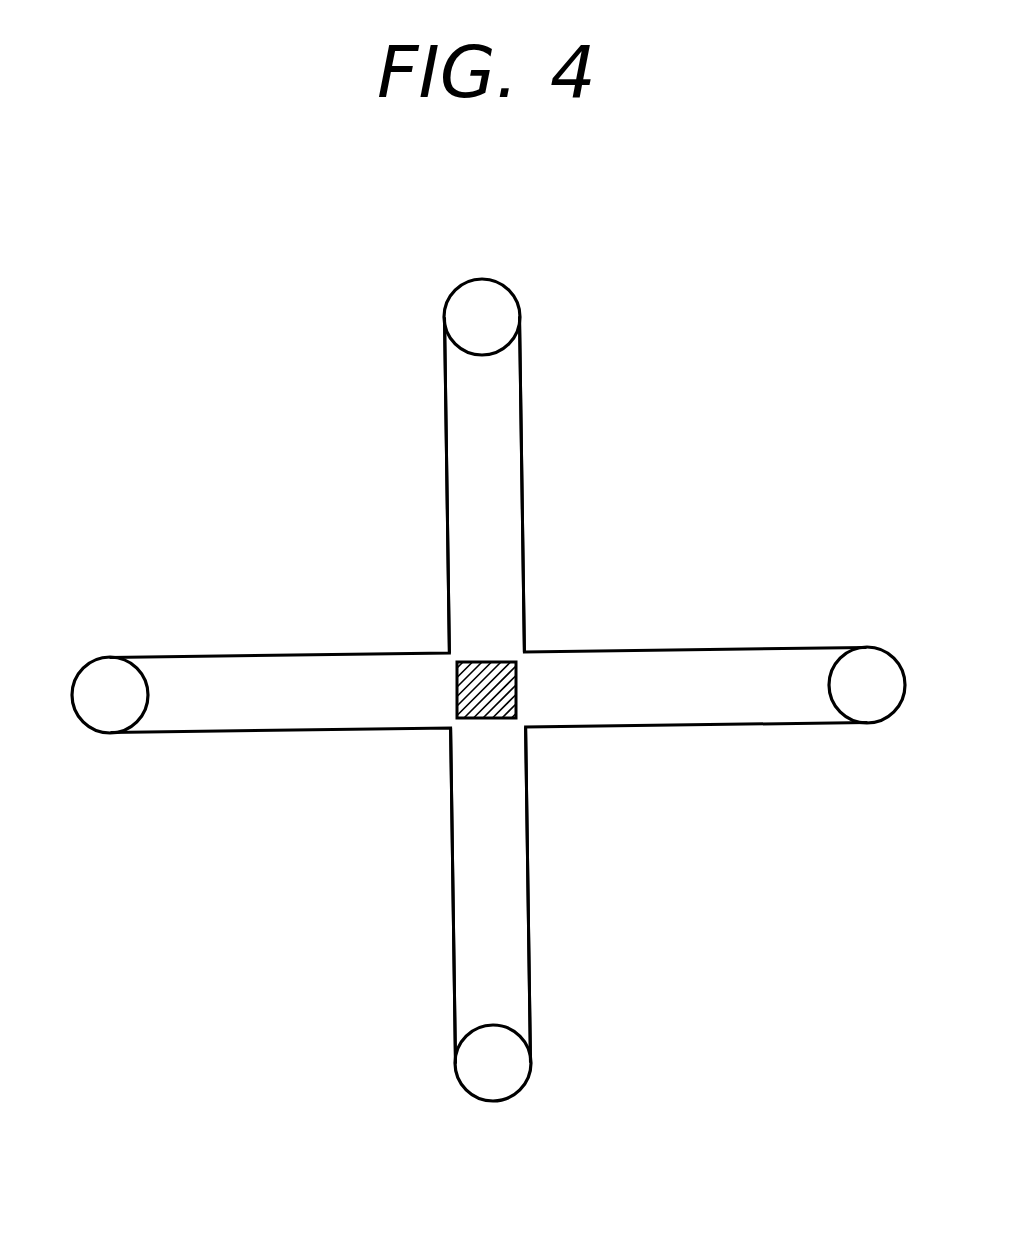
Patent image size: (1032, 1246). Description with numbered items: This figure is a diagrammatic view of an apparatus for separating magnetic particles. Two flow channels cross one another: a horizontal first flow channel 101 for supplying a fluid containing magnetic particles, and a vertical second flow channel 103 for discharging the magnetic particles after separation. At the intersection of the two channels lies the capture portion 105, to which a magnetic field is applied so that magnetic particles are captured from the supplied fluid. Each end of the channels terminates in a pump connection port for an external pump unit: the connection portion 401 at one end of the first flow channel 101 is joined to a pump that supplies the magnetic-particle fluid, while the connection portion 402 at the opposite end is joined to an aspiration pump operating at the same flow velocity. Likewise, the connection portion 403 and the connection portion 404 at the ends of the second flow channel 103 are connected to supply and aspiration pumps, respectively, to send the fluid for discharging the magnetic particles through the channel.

The first flow channel 101 is at (275, 685).
The second flow channel 103 is at (502, 483).
The capture portion 105 is at (500, 686).
The connection portion to a pump for supplying magnetic particles (supply) 401 is at (100, 678).
The connection portion to a pump for supplying magnetic particles (aspiration) 402 is at (873, 667).
The connection portion to a pump for discharging magnetic particles (supply) 403 is at (483, 298).
The connection portion to a pump for discharging magnetic particles (aspiration) 404 is at (513, 1058).